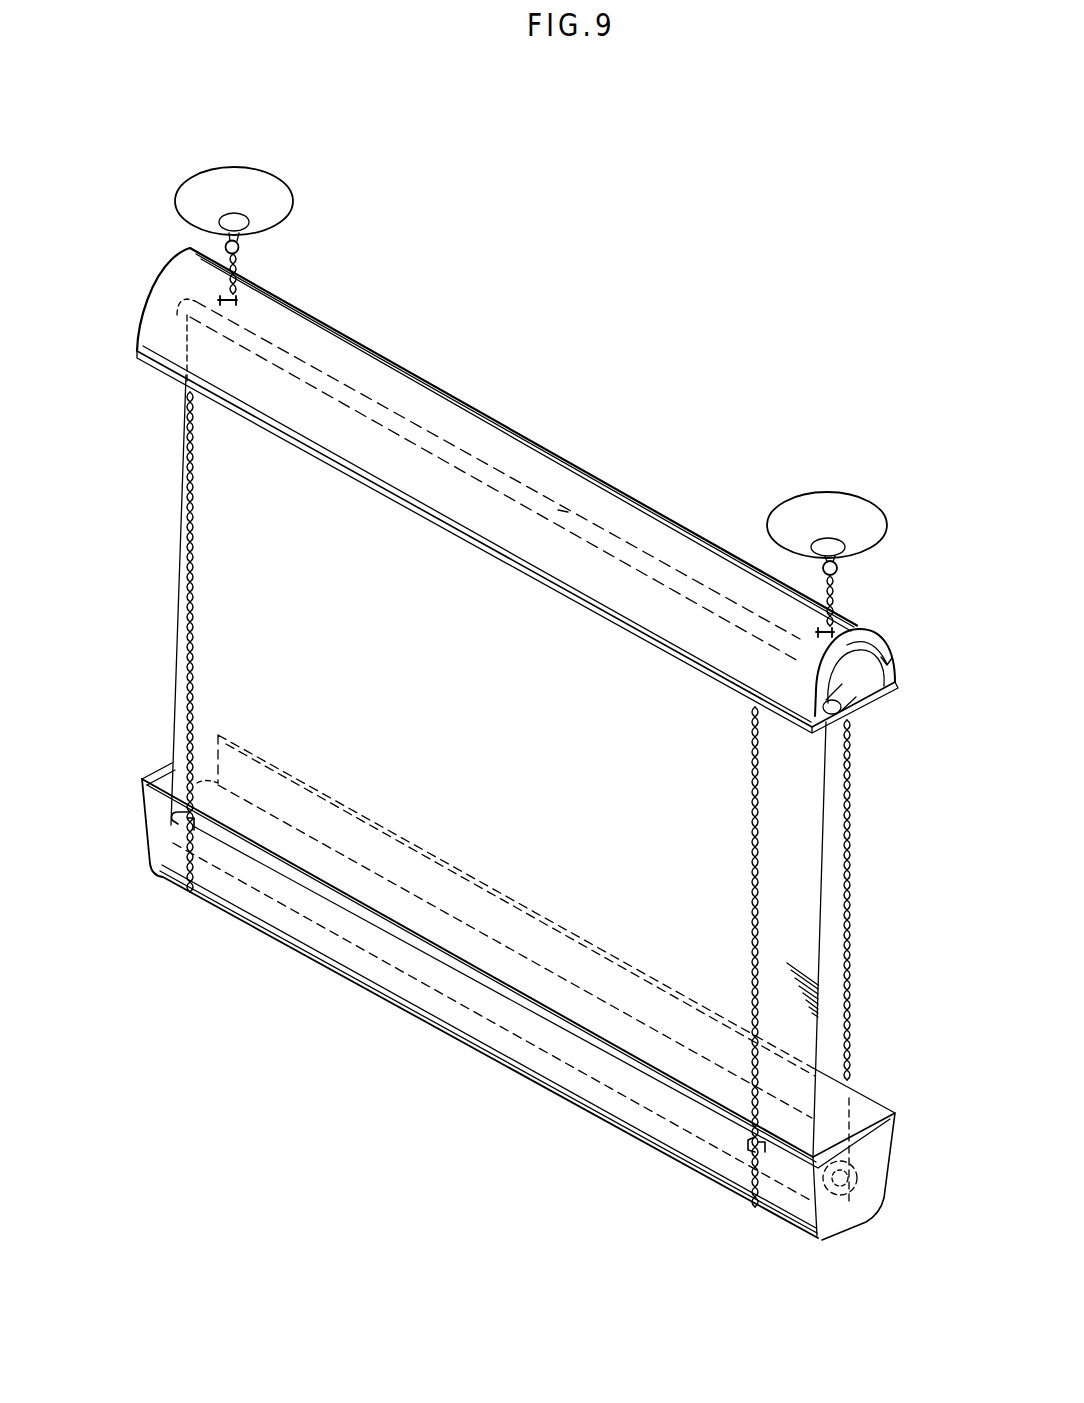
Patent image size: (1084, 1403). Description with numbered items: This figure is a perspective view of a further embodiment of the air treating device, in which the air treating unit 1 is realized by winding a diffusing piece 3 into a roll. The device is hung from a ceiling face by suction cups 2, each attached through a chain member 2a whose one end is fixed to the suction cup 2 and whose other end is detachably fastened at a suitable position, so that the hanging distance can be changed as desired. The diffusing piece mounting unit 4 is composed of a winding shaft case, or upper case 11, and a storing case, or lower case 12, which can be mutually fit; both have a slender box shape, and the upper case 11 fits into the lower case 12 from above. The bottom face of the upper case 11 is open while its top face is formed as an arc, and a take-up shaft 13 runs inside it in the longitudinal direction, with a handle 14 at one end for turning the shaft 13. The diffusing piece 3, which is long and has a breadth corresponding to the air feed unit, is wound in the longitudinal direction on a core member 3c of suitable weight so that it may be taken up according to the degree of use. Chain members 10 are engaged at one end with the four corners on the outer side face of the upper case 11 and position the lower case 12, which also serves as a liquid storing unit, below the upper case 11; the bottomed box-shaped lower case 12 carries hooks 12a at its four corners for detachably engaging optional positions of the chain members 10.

The air treating unit 1 is at (619, 364).
The suction cup 2 is at (278, 203).
The chain member 2a is at (242, 250).
The diffusing piece 3 is at (245, 648).
The core member 3c is at (858, 1176).
The diffusing piece mounting unit 4 is at (463, 383).
The chain members 10 is at (188, 587).
The winding shaft case (upper case) 11 is at (645, 518).
The storing case (lower case) 12 is at (527, 1078).
The hooks 12a is at (180, 812).
The take-up shaft 13 is at (560, 518).
The handle 14 is at (862, 696).